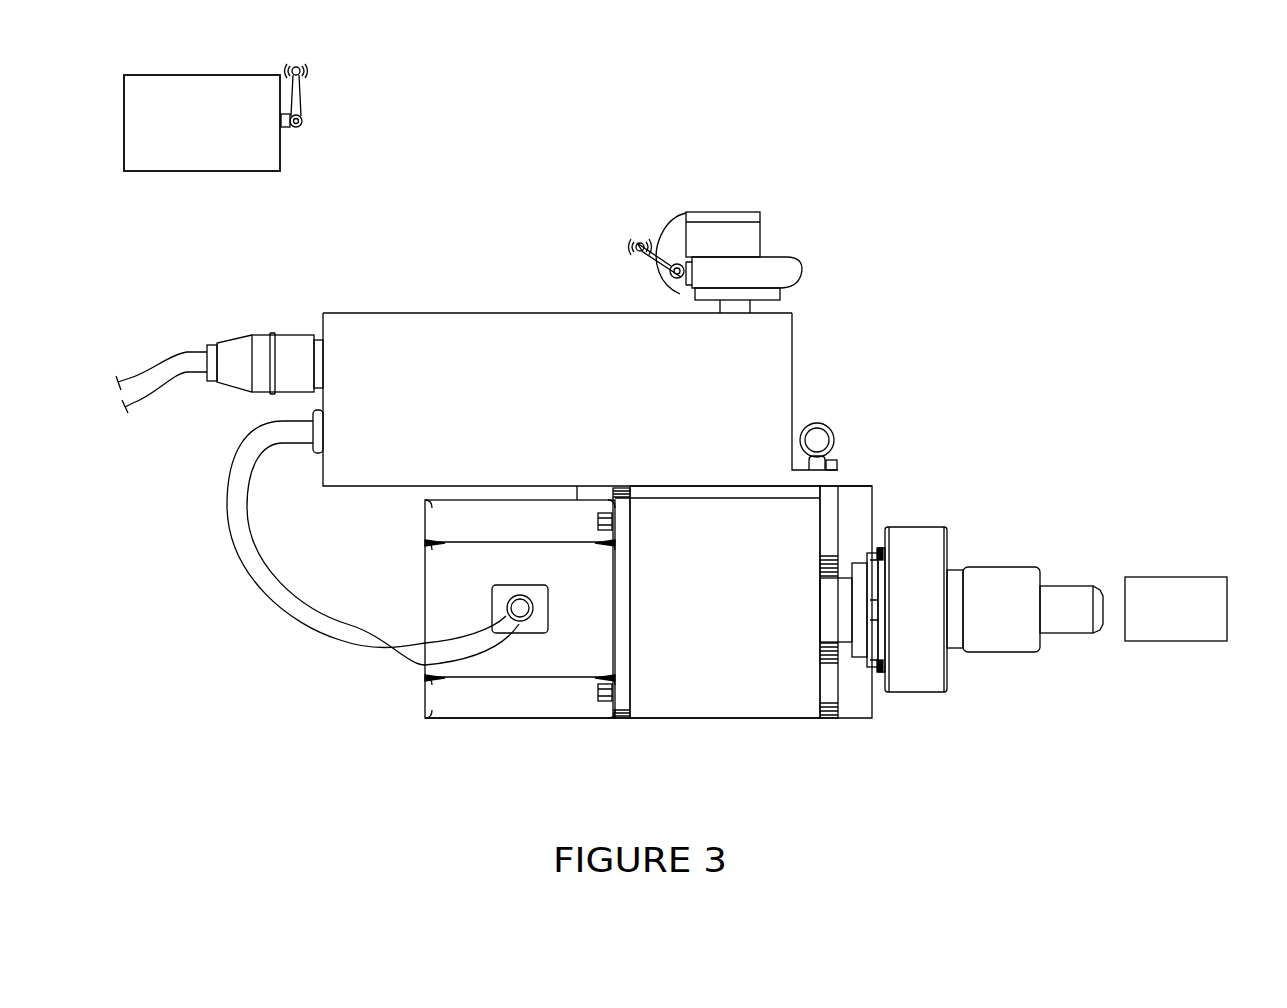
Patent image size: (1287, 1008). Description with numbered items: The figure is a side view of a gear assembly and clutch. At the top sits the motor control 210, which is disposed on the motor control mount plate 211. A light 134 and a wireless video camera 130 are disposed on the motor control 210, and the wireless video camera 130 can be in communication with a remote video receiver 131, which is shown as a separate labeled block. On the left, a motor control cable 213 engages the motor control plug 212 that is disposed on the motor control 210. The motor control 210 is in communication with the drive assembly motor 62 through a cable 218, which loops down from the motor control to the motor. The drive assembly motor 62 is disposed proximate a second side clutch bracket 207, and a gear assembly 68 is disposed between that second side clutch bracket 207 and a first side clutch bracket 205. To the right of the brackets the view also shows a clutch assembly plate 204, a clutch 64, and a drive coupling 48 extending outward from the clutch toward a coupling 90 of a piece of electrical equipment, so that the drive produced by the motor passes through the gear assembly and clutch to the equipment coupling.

The remote video receiver 131 is at (209, 172).
The light 134 is at (688, 222).
The wireless video camera 130 is at (797, 262).
The motor control 210 is at (487, 330).
The motor control plug 212 is at (290, 343).
The motor control cable 213 is at (185, 357).
The cable 218 is at (305, 628).
The drive assembly motor 62 is at (524, 698).
The second side clutch bracket 207 is at (645, 690).
The gear assembly 68 is at (728, 700).
The first side clutch bracket 205 is at (852, 695).
The clutch assembly plate 204 is at (862, 508).
The motor control mount plate 211 is at (826, 477).
The clutch 64 is at (910, 663).
The drive coupling 48 is at (1066, 617).
The coupling 90 is at (1168, 627).